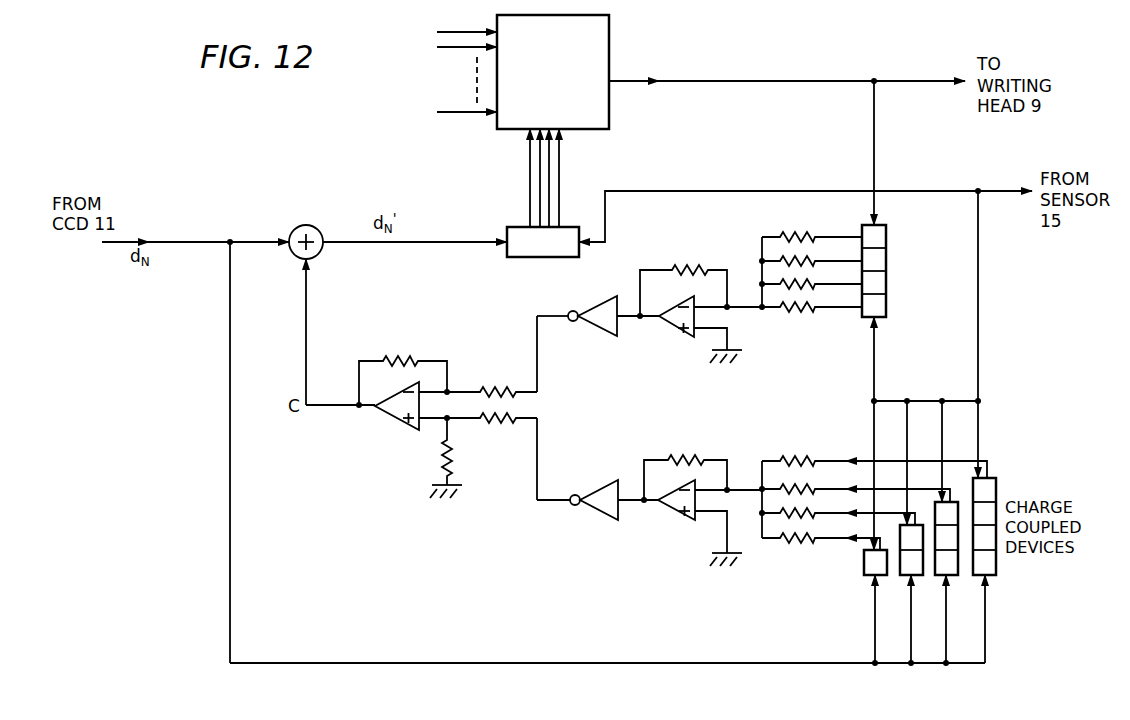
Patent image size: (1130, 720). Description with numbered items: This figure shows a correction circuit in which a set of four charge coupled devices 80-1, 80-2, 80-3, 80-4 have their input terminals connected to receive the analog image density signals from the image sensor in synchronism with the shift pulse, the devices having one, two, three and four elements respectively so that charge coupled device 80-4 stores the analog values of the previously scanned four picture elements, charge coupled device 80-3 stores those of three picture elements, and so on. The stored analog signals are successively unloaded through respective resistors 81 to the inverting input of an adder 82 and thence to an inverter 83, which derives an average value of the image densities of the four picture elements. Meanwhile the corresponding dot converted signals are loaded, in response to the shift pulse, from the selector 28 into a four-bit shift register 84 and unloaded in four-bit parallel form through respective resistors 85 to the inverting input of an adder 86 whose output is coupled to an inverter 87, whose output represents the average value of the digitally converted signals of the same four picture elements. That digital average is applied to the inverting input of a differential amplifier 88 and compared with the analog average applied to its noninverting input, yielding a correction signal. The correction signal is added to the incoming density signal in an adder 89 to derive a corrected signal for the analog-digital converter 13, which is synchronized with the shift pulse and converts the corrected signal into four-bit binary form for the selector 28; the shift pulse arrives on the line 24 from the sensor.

The selector 28 is at (612, 38).
The analog-digital converter 13 is at (527, 258).
The adder 89 is at (318, 257).
The line from sensor 24 is at (1000, 190).
The differential amplifier 88 is at (398, 420).
The inverter 87 is at (601, 332).
The adder 86 is at (672, 332).
The resistors 85 is at (806, 226).
The 4-bit shift register 84 is at (887, 305).
The inverter 83 is at (598, 516).
The adder 82 is at (672, 516).
The resistors 81 is at (806, 449).
The charge coupled device 80-1 is at (865, 566).
The charge coupled device 80-2 is at (918, 580).
The charge coupled device 80-3 is at (955, 580).
The charge coupled device 80-4 is at (997, 578).